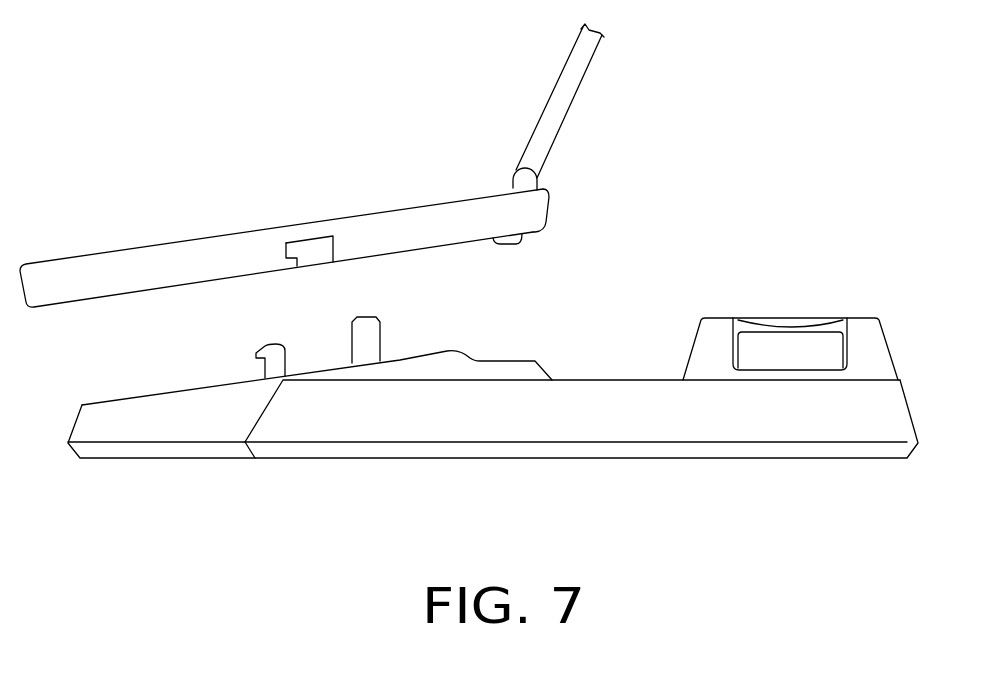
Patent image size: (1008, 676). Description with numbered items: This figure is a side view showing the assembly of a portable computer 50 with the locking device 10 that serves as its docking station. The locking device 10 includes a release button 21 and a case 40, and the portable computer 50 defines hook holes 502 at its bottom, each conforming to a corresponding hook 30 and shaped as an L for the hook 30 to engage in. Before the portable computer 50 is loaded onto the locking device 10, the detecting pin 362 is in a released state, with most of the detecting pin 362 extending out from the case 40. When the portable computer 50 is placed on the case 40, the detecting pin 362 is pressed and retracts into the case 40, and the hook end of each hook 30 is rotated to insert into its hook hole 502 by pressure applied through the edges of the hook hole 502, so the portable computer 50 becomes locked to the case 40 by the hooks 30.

The locking device 10 is at (493, 386).
The release button 21 is at (794, 352).
The hook 30 is at (257, 355).
The detecting pin 362 is at (400, 318).
The case 40 is at (543, 413).
The portable computer 50 is at (358, 165).
The hook hole 502 is at (313, 250).